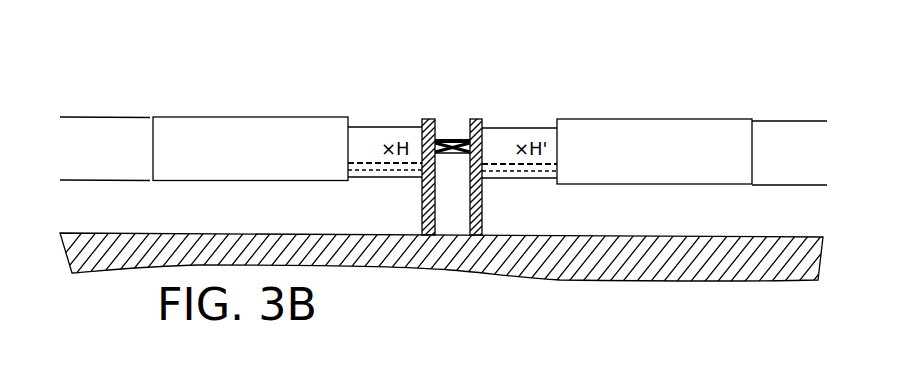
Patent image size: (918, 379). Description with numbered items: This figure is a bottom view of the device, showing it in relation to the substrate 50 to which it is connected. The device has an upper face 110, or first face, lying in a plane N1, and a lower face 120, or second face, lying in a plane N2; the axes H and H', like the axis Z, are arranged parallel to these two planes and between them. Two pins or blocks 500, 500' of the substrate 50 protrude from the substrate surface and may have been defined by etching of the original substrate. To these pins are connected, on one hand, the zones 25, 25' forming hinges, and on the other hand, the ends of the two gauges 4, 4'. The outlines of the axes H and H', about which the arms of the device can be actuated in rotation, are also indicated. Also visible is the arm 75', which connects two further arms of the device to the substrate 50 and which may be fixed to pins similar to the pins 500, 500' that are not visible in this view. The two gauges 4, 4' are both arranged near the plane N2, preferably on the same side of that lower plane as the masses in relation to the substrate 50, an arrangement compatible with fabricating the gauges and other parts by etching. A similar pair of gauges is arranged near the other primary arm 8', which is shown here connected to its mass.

The plane of the upper face N1 is at (85, 116).
The plane of the lower face N2 is at (98, 179).
The primary arm 8' is at (452, 116).
The upper face 110 is at (312, 117).
The lower face 120 is at (743, 186).
The gauge 4 is at (381, 118).
The gauge 4' is at (517, 119).
The hinge zone 25 is at (385, 121).
The hinge zone 25' is at (519, 122).
The arm 75' is at (444, 99).
The axis Z is at (452, 137).
The pin or block 500 is at (390, 175).
The pin or block 500' is at (517, 176).
The substrate 50 is at (452, 250).